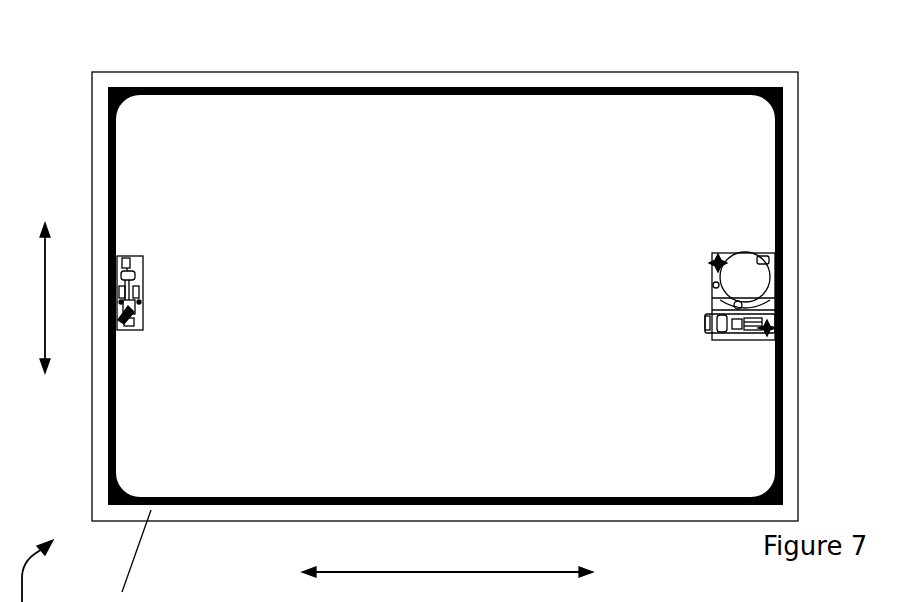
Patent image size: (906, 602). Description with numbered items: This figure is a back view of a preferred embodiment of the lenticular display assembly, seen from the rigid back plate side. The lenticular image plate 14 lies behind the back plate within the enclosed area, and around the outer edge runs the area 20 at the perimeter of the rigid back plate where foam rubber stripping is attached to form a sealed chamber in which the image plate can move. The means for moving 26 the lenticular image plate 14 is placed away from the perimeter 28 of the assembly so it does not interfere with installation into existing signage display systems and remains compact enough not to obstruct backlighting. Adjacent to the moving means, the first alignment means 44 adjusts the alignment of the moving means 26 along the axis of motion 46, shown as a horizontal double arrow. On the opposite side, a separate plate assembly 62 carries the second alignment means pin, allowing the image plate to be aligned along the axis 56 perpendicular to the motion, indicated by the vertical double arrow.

The lenticular image plate 14 is at (145, 112).
The area around the perimeter of the rigid back plate 20 is at (263, 80).
The perimeter 28 is at (342, 72).
The means for moving 26 is at (740, 275).
The first alignment means 44 is at (745, 327).
The separate plate assembly 62 is at (112, 333).
The axis perpendicular to the motion 56 is at (30, 298).
The axis of motion 46 is at (447, 584).